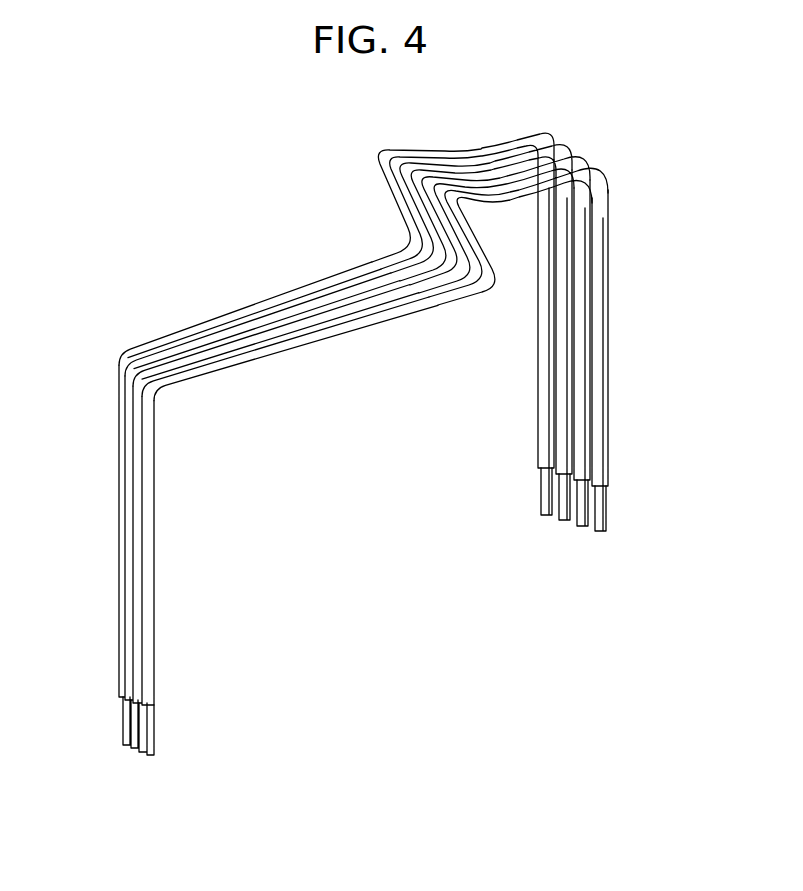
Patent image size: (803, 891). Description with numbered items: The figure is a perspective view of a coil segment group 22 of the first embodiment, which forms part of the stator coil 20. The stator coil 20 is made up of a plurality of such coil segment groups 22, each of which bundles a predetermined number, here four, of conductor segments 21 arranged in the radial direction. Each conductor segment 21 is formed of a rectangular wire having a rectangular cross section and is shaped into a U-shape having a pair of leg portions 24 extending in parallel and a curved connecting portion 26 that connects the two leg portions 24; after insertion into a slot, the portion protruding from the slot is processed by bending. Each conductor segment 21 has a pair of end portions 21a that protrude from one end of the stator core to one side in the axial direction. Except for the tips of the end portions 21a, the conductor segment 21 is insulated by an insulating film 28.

The stator coil 20 is at (370, 444).
The coil segment group 22 is at (172, 283).
The conductor segment 21 is at (343, 281).
The leg portions 24 is at (150, 541).
The curved connecting portion 26 is at (346, 334).
The insulating film 28 is at (611, 335).
The end portions 21a is at (153, 741).